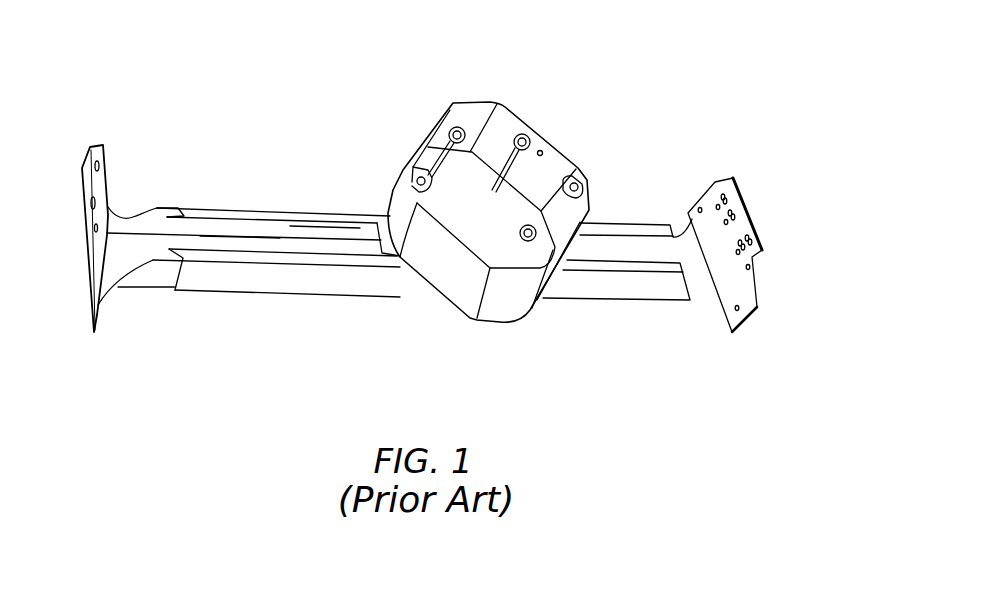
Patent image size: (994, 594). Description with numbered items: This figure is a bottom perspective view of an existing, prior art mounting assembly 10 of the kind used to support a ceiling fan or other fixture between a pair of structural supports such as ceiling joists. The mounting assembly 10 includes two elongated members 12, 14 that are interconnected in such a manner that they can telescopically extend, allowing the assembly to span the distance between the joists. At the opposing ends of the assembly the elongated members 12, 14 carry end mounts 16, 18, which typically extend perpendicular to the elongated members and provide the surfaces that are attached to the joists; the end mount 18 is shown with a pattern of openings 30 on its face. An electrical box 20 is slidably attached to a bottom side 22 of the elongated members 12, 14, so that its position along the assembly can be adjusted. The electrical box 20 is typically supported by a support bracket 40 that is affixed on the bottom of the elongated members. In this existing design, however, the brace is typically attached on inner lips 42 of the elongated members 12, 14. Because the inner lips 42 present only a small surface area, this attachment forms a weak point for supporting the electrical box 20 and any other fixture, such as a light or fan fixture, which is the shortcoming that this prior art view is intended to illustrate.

The mounting assembly 10 is at (718, 47).
The elongated member 12 is at (243, 253).
The elongated member 14 is at (613, 221).
The end mount 16 is at (100, 142).
The end mount 18 is at (760, 283).
The electrical box 20 is at (550, 117).
The bottom side 22 is at (233, 241).
The mounting holes 30 is at (742, 218).
The support bracket 40 is at (366, 235).
The inner lips 42 is at (325, 232).